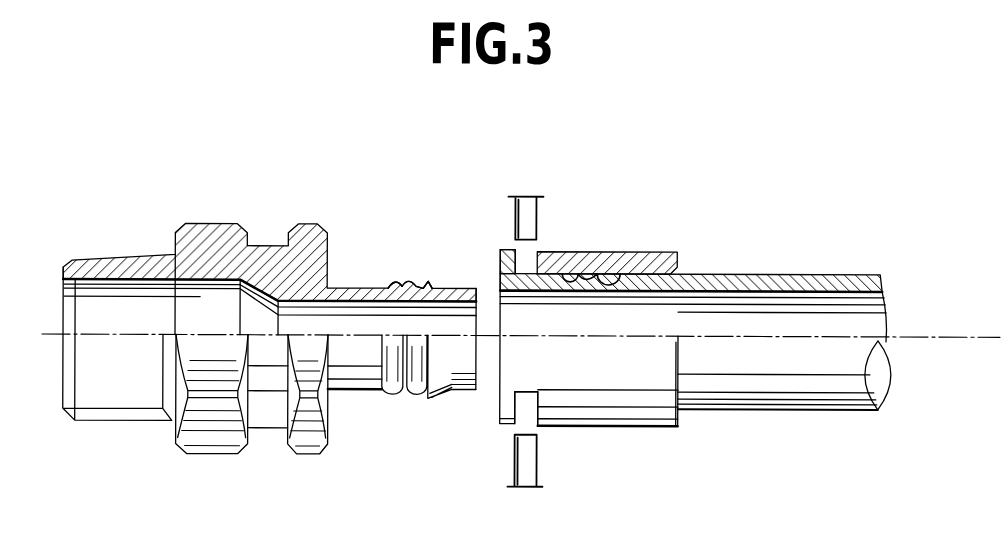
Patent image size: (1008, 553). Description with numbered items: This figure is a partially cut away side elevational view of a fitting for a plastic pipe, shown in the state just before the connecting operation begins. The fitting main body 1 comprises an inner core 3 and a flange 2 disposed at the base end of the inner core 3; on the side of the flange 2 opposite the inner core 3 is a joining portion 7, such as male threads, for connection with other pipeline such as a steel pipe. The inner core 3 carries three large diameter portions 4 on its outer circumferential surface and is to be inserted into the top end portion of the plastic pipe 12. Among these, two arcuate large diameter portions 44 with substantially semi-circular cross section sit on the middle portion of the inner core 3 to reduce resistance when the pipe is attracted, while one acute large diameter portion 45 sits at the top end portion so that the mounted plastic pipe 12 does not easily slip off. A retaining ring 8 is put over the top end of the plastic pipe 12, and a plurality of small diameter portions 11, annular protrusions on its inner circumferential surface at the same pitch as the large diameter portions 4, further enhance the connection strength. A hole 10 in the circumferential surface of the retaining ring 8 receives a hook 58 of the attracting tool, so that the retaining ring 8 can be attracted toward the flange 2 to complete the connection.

The fitting main body 1 is at (225, 445).
The flange 2 is at (308, 448).
The inner core 3 is at (362, 390).
The large diameter portions 4 is at (457, 211).
The joining portion 7 is at (128, 420).
The retaining ring 8 is at (645, 430).
The hole 10 is at (514, 418).
The small diameter portions 11 is at (617, 274).
The plastic pipe 12 is at (793, 408).
The arcuate large diameter portion 44 is at (410, 285).
The acute large diameter portion 45 is at (428, 280).
The hook 58 is at (528, 478).